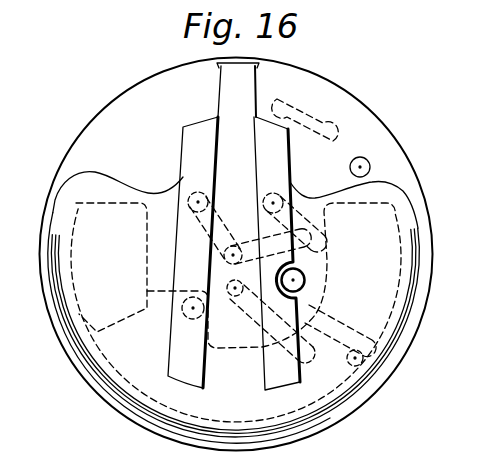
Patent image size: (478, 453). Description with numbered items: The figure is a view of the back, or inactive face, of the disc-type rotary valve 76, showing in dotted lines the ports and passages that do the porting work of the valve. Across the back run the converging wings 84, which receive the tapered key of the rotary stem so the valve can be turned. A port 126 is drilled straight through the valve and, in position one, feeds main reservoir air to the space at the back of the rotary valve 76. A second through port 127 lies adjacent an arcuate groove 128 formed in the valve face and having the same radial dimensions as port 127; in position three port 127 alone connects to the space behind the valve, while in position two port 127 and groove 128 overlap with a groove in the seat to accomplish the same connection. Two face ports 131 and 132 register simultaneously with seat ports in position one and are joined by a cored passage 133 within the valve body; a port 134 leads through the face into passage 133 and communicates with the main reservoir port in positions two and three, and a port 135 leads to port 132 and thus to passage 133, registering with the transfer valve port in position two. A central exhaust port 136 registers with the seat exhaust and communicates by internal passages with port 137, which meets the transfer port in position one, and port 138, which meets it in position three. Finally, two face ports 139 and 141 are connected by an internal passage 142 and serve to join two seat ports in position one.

The rotary valve 76 is at (404, 355).
The converging wings 84 is at (263, 372).
The port 126 is at (305, 281).
The second through port 127 is at (370, 166).
The groove 128 is at (322, 122).
The port 131 is at (76, 203).
The port 132 is at (397, 213).
The cored passage 133 is at (117, 397).
The port 134 is at (184, 317).
The port 135 is at (273, 193).
The central exhaust port 136 is at (226, 259).
The port 137 is at (198, 192).
The port 138 is at (326, 257).
The port 139 is at (362, 368).
The port 141 is at (233, 297).
The internal passage 142 is at (308, 356).